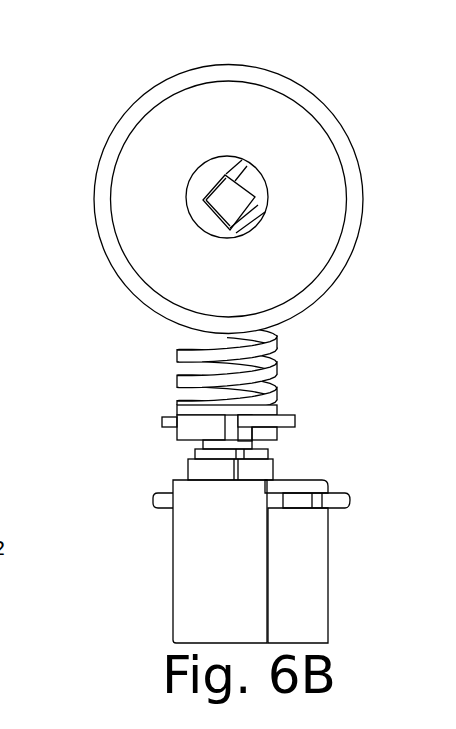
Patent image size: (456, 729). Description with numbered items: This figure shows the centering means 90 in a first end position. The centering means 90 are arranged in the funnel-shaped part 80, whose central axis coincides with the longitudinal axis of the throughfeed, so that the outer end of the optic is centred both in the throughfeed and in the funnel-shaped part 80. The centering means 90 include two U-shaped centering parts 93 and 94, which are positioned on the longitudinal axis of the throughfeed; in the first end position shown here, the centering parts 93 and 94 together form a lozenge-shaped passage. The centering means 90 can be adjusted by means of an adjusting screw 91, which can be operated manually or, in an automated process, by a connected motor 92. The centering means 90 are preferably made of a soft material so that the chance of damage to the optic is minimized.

The funnel-shaped part 80 is at (110, 277).
The centering means 90 is at (132, 445).
The adjusting screw 91 is at (363, 392).
The motor 92 is at (335, 588).
The U-shaped centering part 93 is at (205, 170).
The U-shaped centering part 94 is at (257, 193).